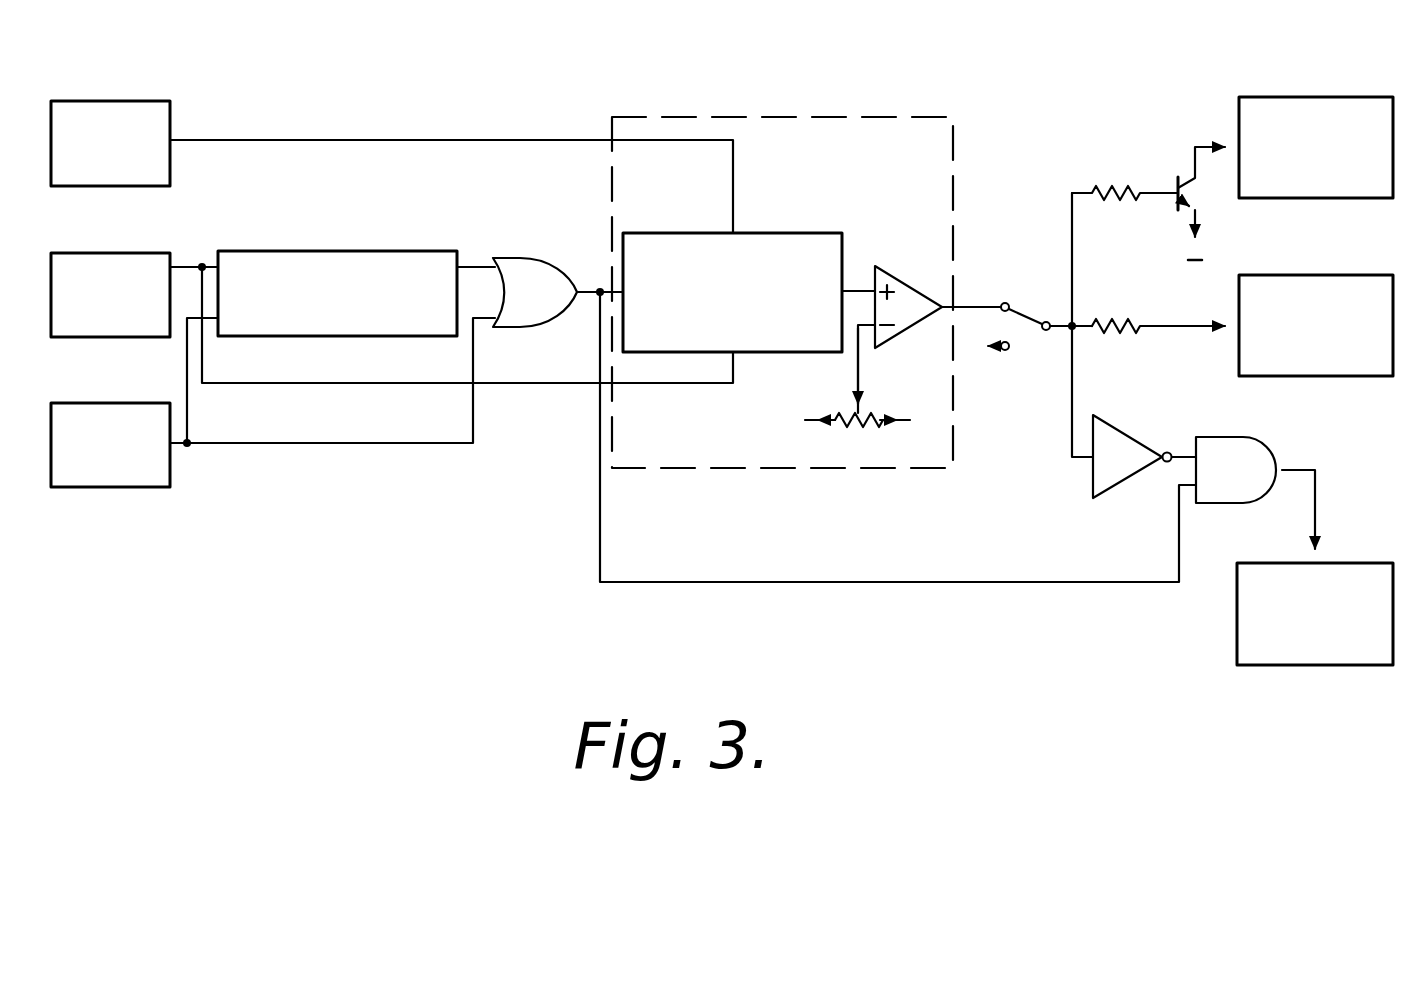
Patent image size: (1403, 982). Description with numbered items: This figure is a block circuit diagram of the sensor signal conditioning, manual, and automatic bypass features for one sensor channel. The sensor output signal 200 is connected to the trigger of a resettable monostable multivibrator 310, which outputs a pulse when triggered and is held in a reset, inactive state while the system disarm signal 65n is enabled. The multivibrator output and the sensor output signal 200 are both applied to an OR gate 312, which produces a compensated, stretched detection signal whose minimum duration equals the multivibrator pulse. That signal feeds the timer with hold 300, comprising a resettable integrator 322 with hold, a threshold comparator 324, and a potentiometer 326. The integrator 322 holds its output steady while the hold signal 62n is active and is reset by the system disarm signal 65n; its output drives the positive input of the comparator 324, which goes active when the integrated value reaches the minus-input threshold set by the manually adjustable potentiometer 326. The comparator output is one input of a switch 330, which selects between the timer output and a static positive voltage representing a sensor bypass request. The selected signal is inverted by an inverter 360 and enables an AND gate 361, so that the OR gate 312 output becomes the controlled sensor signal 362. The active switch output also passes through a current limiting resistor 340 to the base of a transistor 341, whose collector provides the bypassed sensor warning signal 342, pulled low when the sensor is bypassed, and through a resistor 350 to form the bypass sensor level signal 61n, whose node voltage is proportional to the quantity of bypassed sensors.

The hold signal 62n is at (110, 101).
The system disarm signal 65n is at (110, 253).
The sensor output signal 200 is at (108, 403).
The resettable monostable multivibrator 310 is at (338, 251).
The OR gate 312 is at (518, 258).
The timer with hold 300 is at (782, 117).
The resettable integrator with hold 322 is at (800, 233).
The threshold comparator 324 is at (910, 282).
The potentiometer 326 is at (858, 428).
The switch 330 is at (1046, 322).
The current limiting resistor 340 is at (1118, 188).
The transistor 341 is at (1184, 208).
The bypassed sensor warning signal 342 is at (1315, 97).
The resistor 350 is at (1118, 321).
The bypass sensor level signal 61n is at (1315, 275).
The inverter 360 is at (1130, 432).
The AND gate 361 is at (1222, 437).
The controlled sensor signal 362 is at (1362, 563).